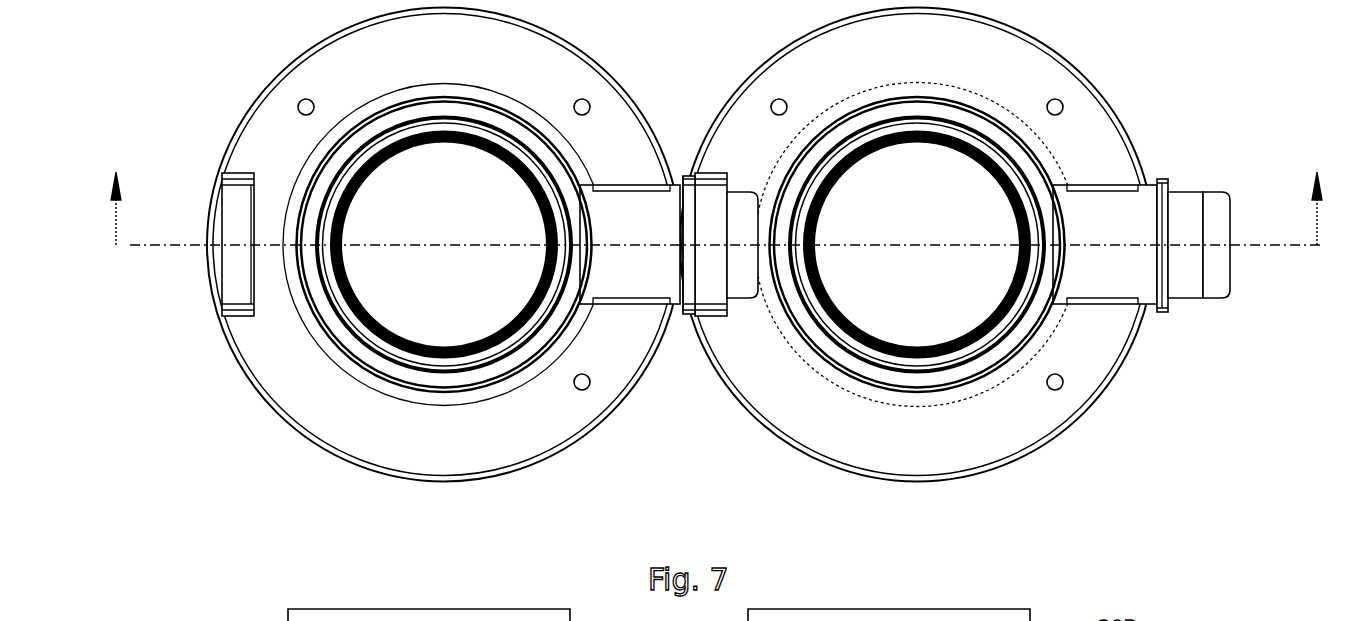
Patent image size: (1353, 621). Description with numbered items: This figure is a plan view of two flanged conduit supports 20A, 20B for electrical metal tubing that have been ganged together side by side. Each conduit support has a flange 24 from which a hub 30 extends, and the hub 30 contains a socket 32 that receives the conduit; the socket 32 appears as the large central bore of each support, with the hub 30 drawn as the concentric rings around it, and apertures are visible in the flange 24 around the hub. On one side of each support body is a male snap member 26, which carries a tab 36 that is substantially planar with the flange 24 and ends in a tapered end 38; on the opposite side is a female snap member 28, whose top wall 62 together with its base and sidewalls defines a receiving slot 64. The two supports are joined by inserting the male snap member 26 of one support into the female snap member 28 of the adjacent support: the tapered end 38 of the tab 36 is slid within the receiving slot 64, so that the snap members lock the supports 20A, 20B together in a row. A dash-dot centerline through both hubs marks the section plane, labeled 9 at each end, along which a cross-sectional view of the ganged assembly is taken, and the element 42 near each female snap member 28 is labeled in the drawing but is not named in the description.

The conduit support 20A is at (563, 44).
The conduit support 20B is at (1062, 53).
The flange 24 is at (465, 62).
The male snap member 26 is at (650, 282).
The female snap member 28 is at (237, 317).
The hub 30 is at (442, 391).
The socket 32 is at (465, 217).
The tab 36 is at (1183, 285).
The tapered end 38 is at (1213, 193).
The collar flange 42 is at (688, 174).
The top wall 62 is at (240, 200).
The receiving slot 64 is at (692, 213).
The section line 9- 9 is at (717, 208).